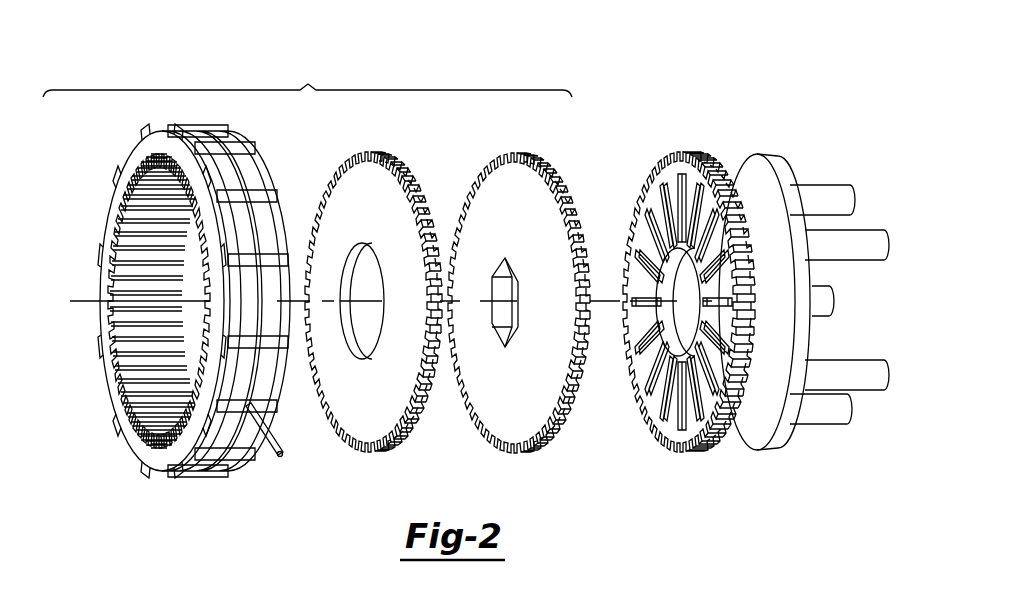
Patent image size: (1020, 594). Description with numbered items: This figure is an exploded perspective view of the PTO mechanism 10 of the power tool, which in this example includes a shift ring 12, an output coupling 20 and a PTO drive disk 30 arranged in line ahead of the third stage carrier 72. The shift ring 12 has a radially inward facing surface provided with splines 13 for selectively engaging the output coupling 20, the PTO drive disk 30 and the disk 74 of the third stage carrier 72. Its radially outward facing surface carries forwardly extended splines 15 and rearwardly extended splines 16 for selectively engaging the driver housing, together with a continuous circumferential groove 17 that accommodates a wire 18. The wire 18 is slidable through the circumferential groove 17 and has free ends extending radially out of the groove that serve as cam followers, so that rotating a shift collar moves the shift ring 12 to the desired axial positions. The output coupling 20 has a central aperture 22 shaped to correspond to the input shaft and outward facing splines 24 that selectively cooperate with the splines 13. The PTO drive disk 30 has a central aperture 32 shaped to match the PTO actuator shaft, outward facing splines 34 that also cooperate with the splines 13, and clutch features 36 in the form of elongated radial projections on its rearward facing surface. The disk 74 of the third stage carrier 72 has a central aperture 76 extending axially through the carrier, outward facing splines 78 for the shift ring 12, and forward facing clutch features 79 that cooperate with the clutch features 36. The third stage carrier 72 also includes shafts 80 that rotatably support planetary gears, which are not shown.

The PTO mechanism 10 is at (318, 68).
The shift ring 12 is at (194, 323).
The splines 13 is at (118, 352).
The forwardly extended splines 15 is at (198, 472).
The rearwardly extended splines 16 is at (273, 412).
The circumferential groove 17 is at (222, 467).
The wire 18 is at (285, 443).
The output coupling 20 is at (368, 324).
The central aperture 22 is at (357, 263).
The splines 24 is at (428, 383).
The PTO drive disk 30 is at (521, 287).
The central aperture 32 is at (502, 273).
The splines 34 is at (533, 162).
The clutch features 36 is at (577, 267).
The third stage carrier 72 is at (804, 336).
The disk 74 is at (670, 318).
The central aperture 76 is at (668, 320).
The splines 78 is at (717, 447).
The clutch features 79 is at (668, 170).
The shafts 80 is at (837, 417).